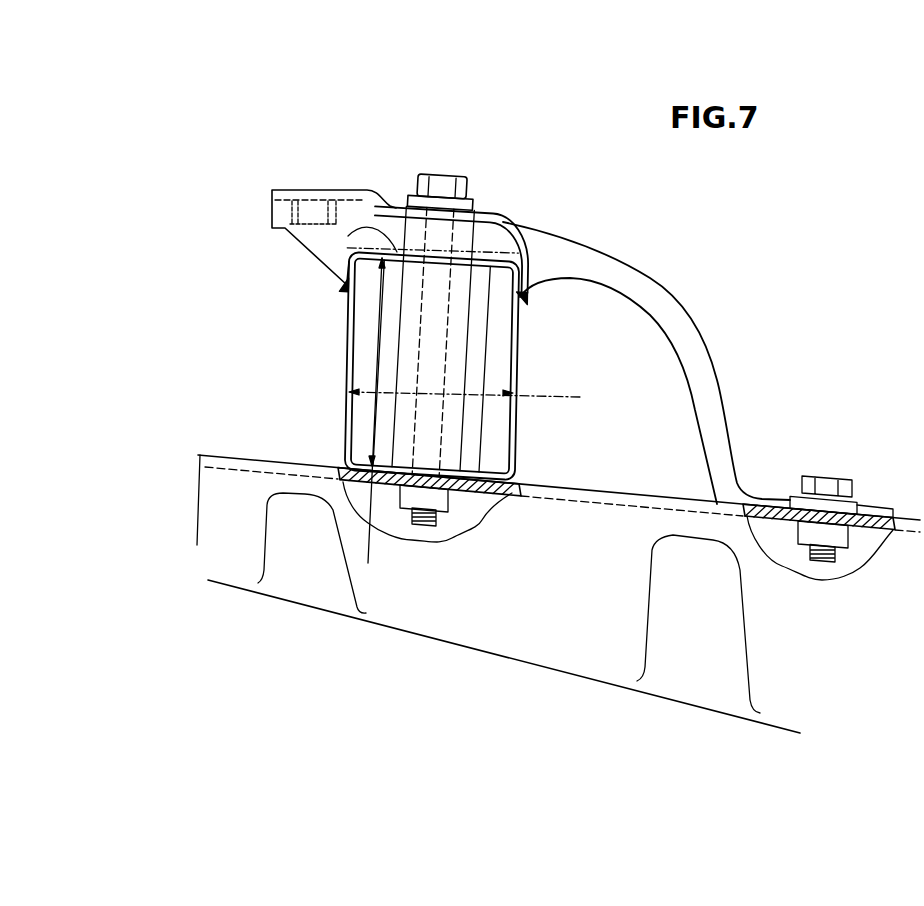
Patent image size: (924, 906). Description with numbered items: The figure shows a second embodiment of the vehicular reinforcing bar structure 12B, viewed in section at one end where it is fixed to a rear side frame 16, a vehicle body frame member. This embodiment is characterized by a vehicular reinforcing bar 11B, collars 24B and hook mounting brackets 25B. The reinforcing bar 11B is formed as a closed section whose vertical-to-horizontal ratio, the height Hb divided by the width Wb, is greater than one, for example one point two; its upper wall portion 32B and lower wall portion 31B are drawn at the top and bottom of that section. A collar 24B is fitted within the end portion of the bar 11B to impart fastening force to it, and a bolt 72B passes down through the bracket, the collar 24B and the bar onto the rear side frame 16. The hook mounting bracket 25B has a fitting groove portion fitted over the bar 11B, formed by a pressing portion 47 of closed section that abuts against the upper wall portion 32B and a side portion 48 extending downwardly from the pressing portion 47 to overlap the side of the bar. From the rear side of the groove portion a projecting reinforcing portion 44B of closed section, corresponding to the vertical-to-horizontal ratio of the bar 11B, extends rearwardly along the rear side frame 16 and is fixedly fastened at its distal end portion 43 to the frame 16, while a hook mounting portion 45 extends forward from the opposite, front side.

The vehicular reinforcing bar 11B is at (293, 382).
The reinforcing bar structure 12B is at (535, 155).
The rear side frame 16 is at (255, 637).
The collar 24B is at (372, 410).
The hook mounting bracket 25B is at (400, 152).
The bottom wall 31B is at (482, 470).
The tubular portion 32B is at (483, 272).
The distal end portion 43 is at (772, 495).
The projecting reinforcing portion 44B is at (673, 284).
The hook mounting portion 45 is at (347, 188).
The pressing portion 47 is at (363, 228).
The side portion 48 is at (347, 272).
The bolt 72B is at (460, 175).